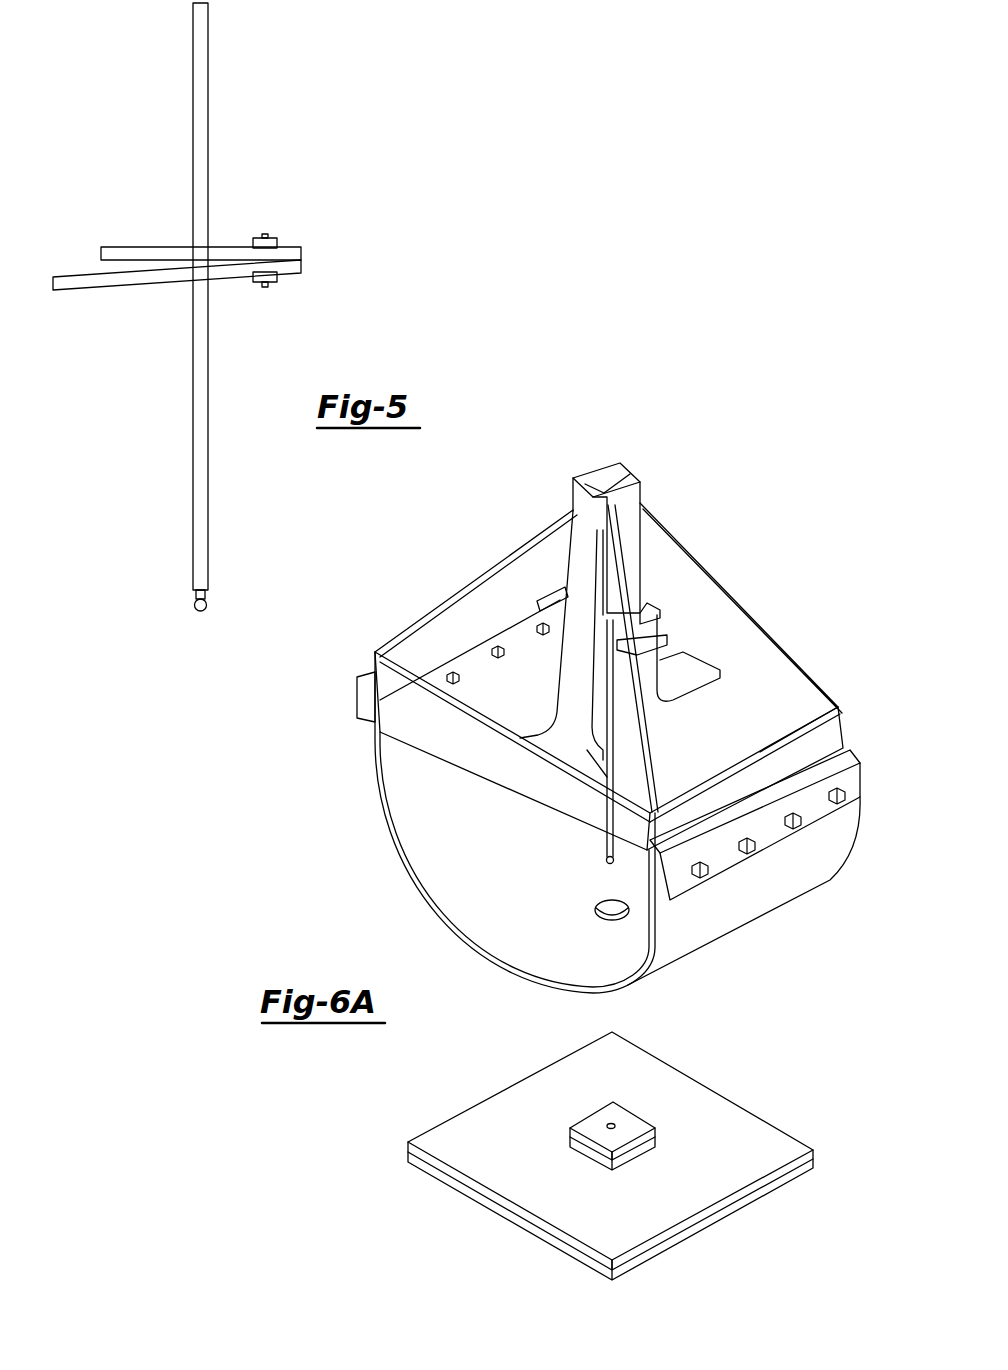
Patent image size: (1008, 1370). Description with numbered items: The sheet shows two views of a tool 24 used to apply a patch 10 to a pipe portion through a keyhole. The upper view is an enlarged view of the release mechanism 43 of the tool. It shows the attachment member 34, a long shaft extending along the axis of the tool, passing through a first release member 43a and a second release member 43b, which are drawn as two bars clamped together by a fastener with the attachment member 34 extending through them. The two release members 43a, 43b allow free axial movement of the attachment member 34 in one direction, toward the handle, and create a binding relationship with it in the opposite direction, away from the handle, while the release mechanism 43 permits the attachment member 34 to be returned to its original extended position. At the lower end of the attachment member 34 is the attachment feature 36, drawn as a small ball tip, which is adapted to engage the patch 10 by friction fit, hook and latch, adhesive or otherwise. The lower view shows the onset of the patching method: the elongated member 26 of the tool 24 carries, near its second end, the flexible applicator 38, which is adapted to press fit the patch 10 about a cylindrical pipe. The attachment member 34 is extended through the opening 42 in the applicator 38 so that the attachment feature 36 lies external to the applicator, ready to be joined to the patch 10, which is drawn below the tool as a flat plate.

In FIG. 6A, the patch 10 is at (786, 1109).
In FIG. 6A, the tool 24 is at (440, 574).
In FIG. 6A, the elongated member 26 is at (626, 500).
In FIG. 5, the attachment member 34 is at (203, 99).
In FIG. 6A, the attachment member 34 is at (540, 592).
In FIG. 5, the attachment feature 36 is at (193, 599).
In FIG. 6A, the attachment feature 36 is at (606, 863).
In FIG. 6A, the applicator 38 is at (527, 974).
In FIG. 6A, the opening 42 is at (598, 905).
In FIG. 5, the release mechanism 43 is at (157, 261).
In FIG. 5, the first release member 43a is at (140, 247).
In FIG. 5, the second release member 43b is at (119, 289).